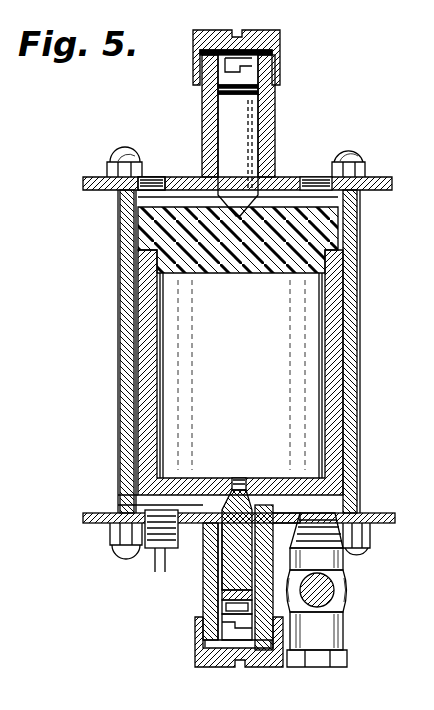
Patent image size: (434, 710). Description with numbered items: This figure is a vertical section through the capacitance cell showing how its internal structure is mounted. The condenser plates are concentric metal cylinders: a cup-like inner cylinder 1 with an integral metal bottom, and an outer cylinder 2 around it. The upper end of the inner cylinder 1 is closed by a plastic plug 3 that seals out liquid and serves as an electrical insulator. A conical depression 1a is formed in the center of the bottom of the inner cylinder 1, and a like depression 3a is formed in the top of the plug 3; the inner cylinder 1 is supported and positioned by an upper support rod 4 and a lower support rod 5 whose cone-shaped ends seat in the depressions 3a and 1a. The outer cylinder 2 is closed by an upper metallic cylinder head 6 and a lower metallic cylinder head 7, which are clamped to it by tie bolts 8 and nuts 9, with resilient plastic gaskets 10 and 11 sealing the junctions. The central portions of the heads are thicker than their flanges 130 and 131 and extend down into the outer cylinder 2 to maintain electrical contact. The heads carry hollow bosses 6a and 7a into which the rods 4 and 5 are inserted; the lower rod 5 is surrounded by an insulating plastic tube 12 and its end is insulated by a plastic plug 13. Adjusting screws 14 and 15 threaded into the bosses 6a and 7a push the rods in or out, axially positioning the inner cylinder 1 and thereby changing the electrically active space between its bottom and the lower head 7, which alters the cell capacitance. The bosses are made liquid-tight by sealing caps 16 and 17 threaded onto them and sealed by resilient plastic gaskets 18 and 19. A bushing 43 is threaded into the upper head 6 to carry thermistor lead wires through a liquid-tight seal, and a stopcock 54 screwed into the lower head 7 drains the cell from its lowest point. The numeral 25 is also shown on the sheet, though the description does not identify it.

The inner cylinder 1 is at (335, 275).
The conical shaped depression 1a is at (237, 477).
The outer cylinder 2 is at (345, 340).
The plastic plug 3 is at (338, 240).
The depression 3a is at (338, 215).
The support rod 4 is at (252, 130).
The lower support rod 5 is at (252, 492).
The upper cylinder head 6 is at (179, 177).
The hollow boss 6a is at (203, 120).
The lower cylinder head 7 is at (205, 535).
The hollow boss 7a is at (216, 553).
The tie bolts 8 is at (118, 338).
The nuts 9 is at (124, 153).
The gasket 10 is at (135, 191).
The gasket 11 is at (120, 507).
The plastic tube 12 is at (222, 576).
The plastic plug 13 is at (222, 595).
The adjusting screw 14 is at (258, 90).
The adjusting screw 15 is at (222, 610).
The sealing cap 16 is at (278, 33).
The sealing cap 17 is at (226, 667).
The resilient plastic gasket 18 is at (272, 53).
The resilient plastic gasket 19 is at (205, 645).
The probe assembly 25 is at (361, 522).
The bushing 43 is at (150, 548).
The stopcock 54 is at (348, 660).
The flange 130 is at (90, 179).
The flange 131 is at (83, 519).